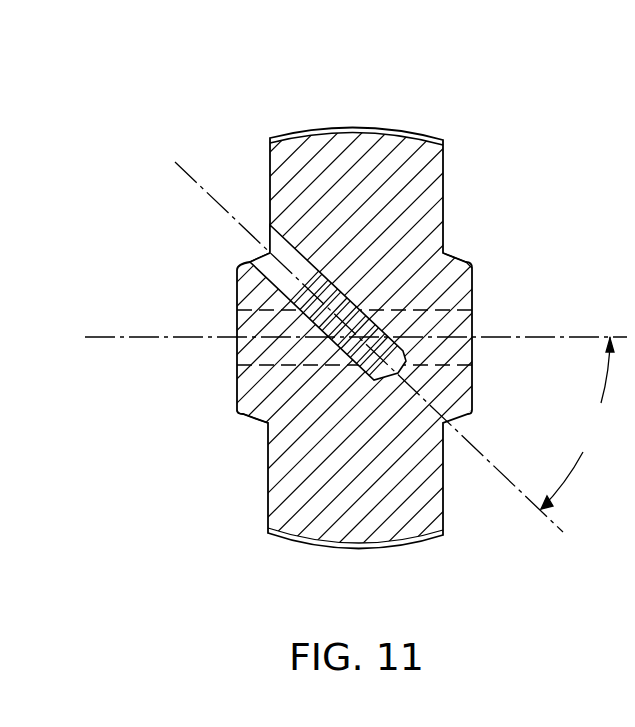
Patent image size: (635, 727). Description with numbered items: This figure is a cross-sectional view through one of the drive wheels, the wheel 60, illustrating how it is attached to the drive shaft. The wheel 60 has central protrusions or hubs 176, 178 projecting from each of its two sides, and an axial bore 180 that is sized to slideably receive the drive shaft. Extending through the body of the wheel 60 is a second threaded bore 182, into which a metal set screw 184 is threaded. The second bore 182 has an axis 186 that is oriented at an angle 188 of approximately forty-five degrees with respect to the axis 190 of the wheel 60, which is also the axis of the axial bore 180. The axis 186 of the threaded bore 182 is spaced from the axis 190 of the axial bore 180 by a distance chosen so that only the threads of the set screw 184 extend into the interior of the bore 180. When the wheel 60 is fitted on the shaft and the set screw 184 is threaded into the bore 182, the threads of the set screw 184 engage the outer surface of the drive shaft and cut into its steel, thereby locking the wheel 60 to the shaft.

The drive wheel 60 is at (417, 135).
The hub 176 is at (248, 419).
The hub 178 is at (471, 262).
The axial bore 180 is at (462, 326).
The second threaded bore 182 is at (303, 261).
The set screw 184 is at (339, 273).
The axis of the threaded bore 186 is at (181, 169).
The angle 188 is at (580, 423).
The axis of the wheel 190 is at (157, 335).